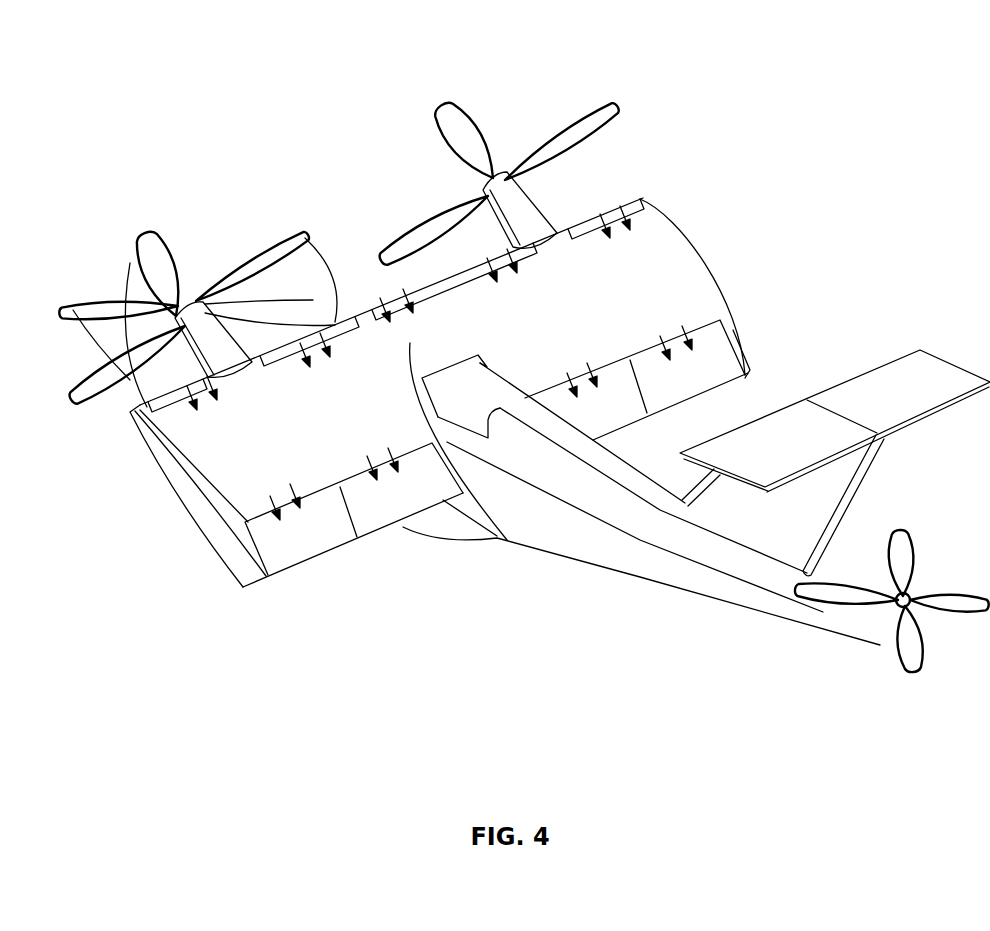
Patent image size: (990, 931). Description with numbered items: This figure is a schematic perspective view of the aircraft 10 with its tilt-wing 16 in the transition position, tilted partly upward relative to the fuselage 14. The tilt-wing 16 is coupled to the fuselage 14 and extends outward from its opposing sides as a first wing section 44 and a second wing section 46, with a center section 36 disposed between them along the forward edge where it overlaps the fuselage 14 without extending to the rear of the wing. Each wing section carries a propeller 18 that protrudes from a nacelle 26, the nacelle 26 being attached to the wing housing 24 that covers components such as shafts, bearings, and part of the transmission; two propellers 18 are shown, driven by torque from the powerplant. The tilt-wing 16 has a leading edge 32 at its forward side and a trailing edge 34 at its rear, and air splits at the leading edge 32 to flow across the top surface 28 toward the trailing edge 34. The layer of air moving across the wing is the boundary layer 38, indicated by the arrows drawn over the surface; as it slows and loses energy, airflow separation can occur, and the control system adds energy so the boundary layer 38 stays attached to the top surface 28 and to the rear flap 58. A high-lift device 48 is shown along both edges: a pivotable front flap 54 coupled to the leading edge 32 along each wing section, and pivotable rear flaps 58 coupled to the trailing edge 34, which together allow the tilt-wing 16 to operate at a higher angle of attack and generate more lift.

The aircraft 10 is at (786, 55).
The fuselage 14 is at (620, 570).
The tilt-wing 16 is at (178, 478).
The propeller 18 is at (143, 253).
The wing housing 24 is at (455, 387).
The nacelle 26 is at (226, 362).
The top surface 28 is at (693, 307).
The leading edge 32 is at (143, 407).
The trailing edge 34 is at (253, 588).
The center section 36 is at (507, 540).
The boundary layer 38 is at (210, 398).
The first wing section 44 is at (228, 502).
The second wing section 46 is at (690, 267).
The high-lift device 48 is at (501, 340).
The front flap 54 is at (340, 318).
The rear flap 58 is at (377, 517).